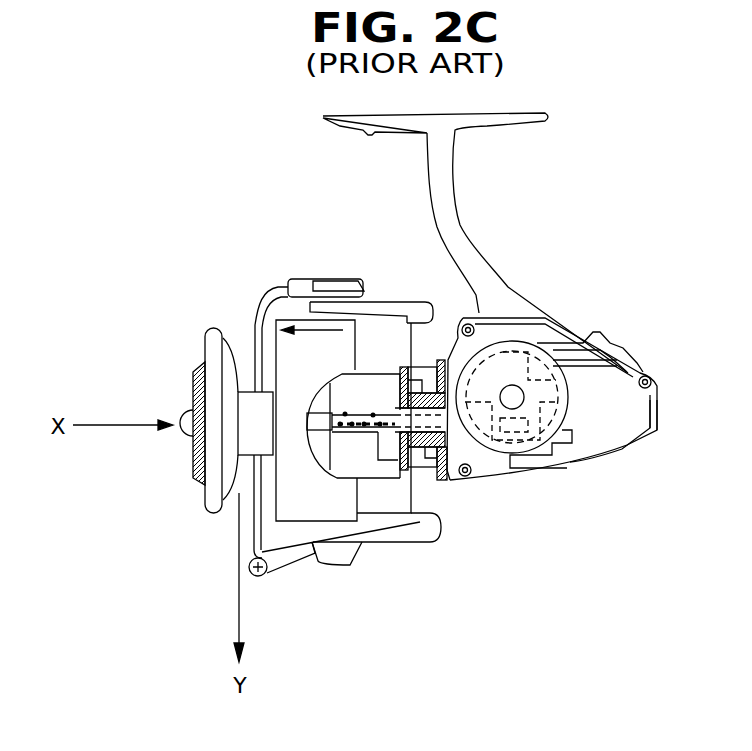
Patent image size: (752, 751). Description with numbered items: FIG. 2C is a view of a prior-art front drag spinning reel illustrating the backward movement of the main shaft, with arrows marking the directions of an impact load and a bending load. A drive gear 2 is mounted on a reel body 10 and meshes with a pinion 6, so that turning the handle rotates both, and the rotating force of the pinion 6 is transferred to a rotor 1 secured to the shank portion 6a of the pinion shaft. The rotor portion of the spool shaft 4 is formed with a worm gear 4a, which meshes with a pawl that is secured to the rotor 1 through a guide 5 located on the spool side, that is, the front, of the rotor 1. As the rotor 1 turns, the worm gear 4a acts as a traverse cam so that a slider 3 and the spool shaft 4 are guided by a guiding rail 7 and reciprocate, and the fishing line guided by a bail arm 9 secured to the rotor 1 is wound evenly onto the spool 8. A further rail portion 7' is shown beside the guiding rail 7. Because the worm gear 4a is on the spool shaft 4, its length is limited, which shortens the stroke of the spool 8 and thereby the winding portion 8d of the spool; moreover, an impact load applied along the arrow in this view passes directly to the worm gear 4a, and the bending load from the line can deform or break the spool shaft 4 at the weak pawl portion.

The rotor 1 is at (365, 460).
The drive gear 2 is at (537, 353).
The slider 3 is at (576, 433).
The spool shaft 4 is at (322, 422).
The worm gear 4a is at (363, 410).
The guide 5 is at (385, 440).
The pinion 6 is at (455, 318).
The shank portion of pinion shaft 6a is at (445, 483).
The guiding rail 7 is at (640, 452).
The cover fastening portion 7' is at (669, 365).
The spool 8 is at (205, 347).
The winding portion of the spool 8d is at (252, 432).
The bail arm 9 is at (258, 322).
The reel body 10 is at (500, 282).